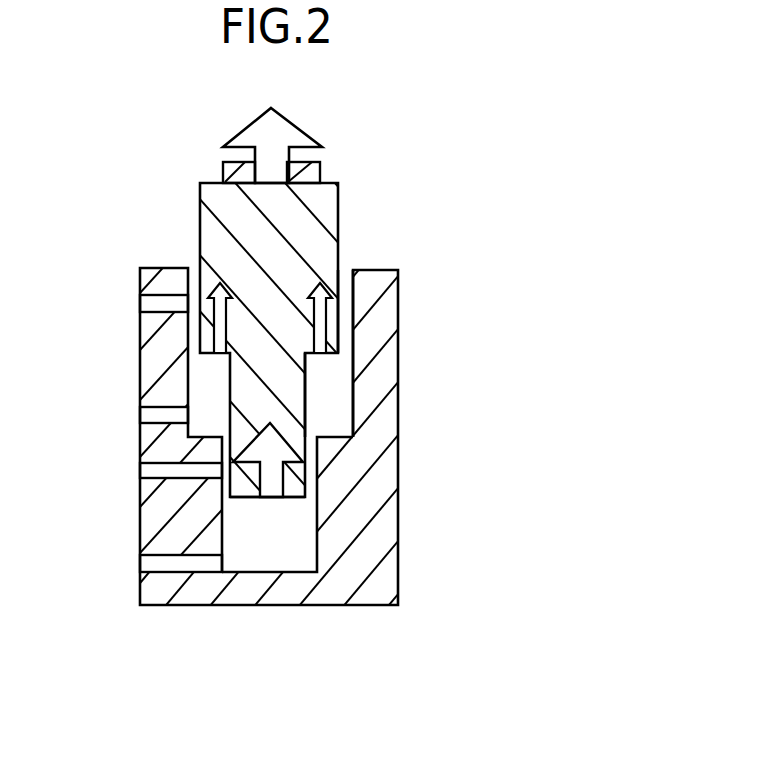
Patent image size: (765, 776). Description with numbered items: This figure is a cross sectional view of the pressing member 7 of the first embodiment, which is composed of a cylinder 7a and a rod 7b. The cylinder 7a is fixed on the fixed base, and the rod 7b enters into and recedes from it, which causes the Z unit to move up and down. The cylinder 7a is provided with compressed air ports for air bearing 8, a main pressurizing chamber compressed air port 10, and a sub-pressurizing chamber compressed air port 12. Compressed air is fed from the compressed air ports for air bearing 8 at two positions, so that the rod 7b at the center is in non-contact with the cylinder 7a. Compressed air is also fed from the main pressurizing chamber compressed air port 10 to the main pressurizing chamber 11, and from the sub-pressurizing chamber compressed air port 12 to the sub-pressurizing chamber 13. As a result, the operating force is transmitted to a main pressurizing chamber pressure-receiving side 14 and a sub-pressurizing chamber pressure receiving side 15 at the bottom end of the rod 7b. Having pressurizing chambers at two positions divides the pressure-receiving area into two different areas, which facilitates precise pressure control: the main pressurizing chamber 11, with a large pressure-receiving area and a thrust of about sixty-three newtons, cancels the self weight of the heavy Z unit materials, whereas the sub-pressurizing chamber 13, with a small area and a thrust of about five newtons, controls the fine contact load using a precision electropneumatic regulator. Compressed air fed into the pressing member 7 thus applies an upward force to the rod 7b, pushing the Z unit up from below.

The pressing member 7 is at (370, 127).
The cylinder 7a is at (388, 328).
The rod 7b is at (338, 207).
The compressed air ports for air bearing 8 is at (147, 303).
The main pressurizing chamber compressed air port 10 is at (147, 563).
The main pressurizing chamber 11 is at (252, 560).
The sub-pressurizing chamber compressed air port 12 is at (147, 418).
The sub-pressurizing chamber 13 is at (338, 415).
The main pressurizing chamber pressure-receiving side 14 is at (293, 498).
The sub-pressurizing chamber pressure receiving side 15 is at (336, 356).